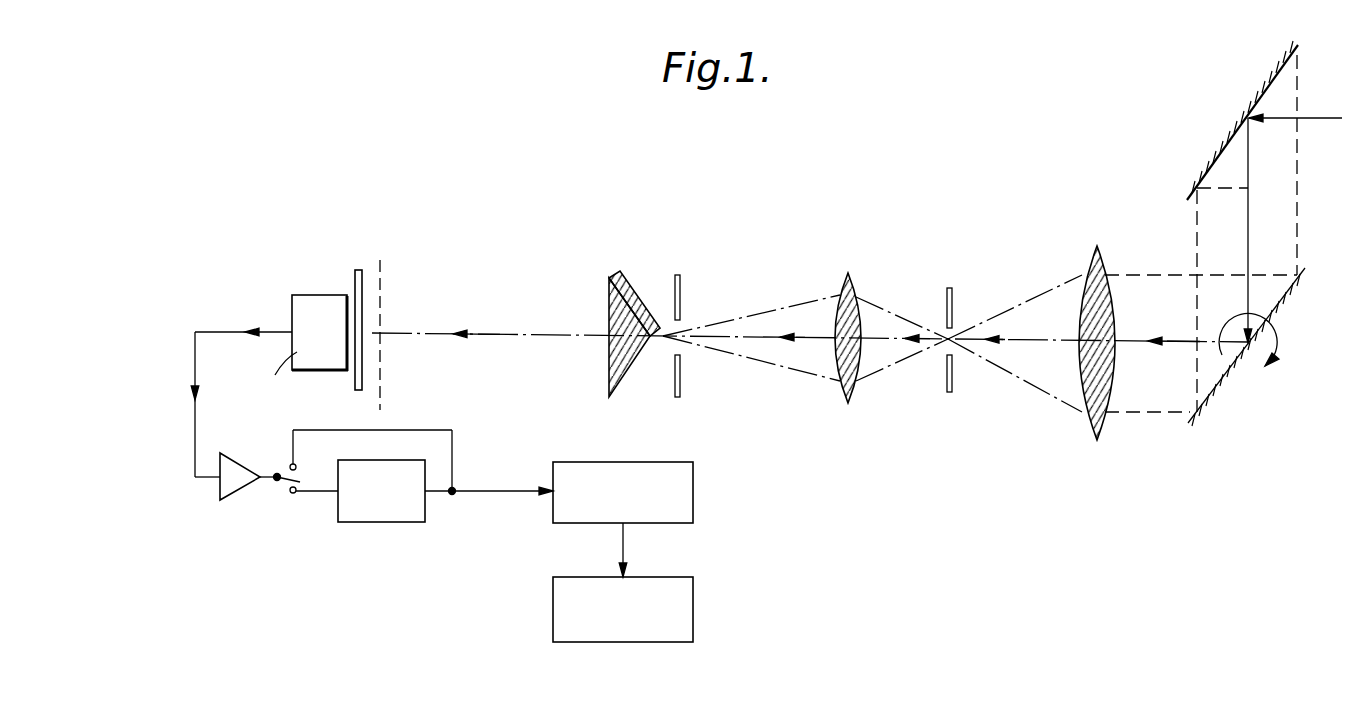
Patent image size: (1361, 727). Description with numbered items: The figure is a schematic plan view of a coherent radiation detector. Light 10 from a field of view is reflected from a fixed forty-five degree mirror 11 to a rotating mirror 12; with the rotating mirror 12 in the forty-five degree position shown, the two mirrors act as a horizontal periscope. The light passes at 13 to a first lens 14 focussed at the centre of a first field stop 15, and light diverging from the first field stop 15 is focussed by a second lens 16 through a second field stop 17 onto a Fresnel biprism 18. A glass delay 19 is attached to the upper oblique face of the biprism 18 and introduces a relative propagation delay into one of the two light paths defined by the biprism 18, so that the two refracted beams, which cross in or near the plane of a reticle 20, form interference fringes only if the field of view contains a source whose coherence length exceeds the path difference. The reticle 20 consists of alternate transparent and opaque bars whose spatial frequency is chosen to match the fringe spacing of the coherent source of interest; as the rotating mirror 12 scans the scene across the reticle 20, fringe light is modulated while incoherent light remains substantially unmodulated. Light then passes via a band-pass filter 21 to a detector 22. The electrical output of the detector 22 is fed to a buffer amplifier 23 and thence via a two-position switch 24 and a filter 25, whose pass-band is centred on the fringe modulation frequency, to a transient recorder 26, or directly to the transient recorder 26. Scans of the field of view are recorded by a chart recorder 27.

The light 10 is at (1322, 118).
The fixed 45° mirror 11 is at (1281, 66).
The rotating mirror 12 is at (1286, 298).
The light path 13 is at (1127, 340).
The first lens 14 is at (1098, 436).
The first field stop 15 is at (948, 286).
The second lens 16 is at (846, 405).
The second field stop 17 is at (681, 276).
The Fresnel biprism 18 is at (609, 305).
The glass delay 19 is at (621, 280).
The reticle 20 is at (383, 268).
The band-pass filter 21 is at (358, 269).
The detector 22 is at (313, 294).
The buffer amplifier 23 is at (229, 466).
The switch 24 is at (285, 492).
The filter 25 is at (380, 523).
The transient recorder 26 is at (699, 492).
The chart recorder 27 is at (697, 606).